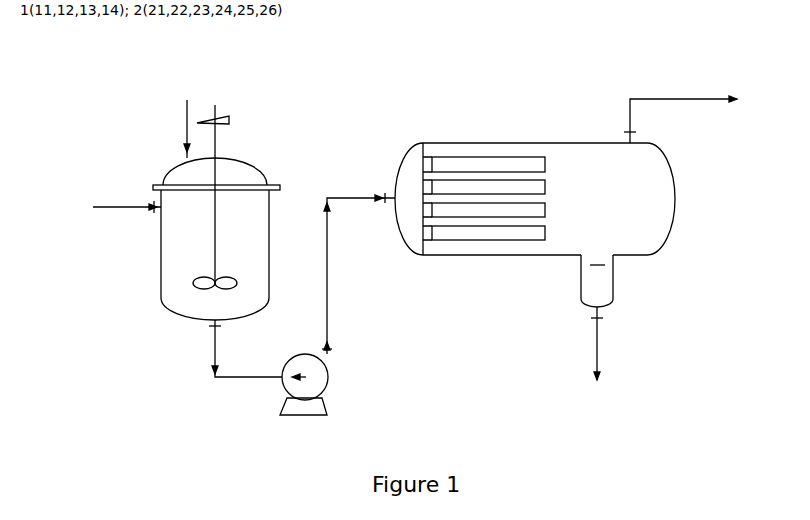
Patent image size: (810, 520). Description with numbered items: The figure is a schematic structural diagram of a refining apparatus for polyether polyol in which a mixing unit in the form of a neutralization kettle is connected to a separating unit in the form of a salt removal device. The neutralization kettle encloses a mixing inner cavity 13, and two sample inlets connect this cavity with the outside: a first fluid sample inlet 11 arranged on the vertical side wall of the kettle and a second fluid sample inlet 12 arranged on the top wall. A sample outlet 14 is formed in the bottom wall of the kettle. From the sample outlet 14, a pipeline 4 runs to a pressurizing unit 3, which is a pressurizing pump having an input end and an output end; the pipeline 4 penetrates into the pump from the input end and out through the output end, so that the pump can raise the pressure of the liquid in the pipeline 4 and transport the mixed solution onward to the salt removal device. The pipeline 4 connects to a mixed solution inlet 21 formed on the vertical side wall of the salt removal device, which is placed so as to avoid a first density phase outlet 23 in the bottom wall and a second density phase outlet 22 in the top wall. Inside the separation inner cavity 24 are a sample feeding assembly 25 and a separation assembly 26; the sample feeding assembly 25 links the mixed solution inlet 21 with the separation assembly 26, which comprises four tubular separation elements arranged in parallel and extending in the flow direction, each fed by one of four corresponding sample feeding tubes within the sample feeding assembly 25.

The pressurizing unit 3 is at (317, 383).
The pipeline 4 is at (330, 308).
The first fluid sample inlet 11 is at (185, 114).
The second fluid sample inlet 12 is at (125, 207).
The mixing inner cavity 13 is at (262, 275).
The sample outlet 14 is at (212, 328).
The mixed solution inlet 21 is at (394, 197).
The second density phase outlet 22 is at (666, 99).
The first density phase outlet 23 is at (607, 286).
The separation inner cavity 24 is at (638, 222).
The sample feeding assembly 25 is at (421, 244).
The separation assembly 26 is at (490, 237).